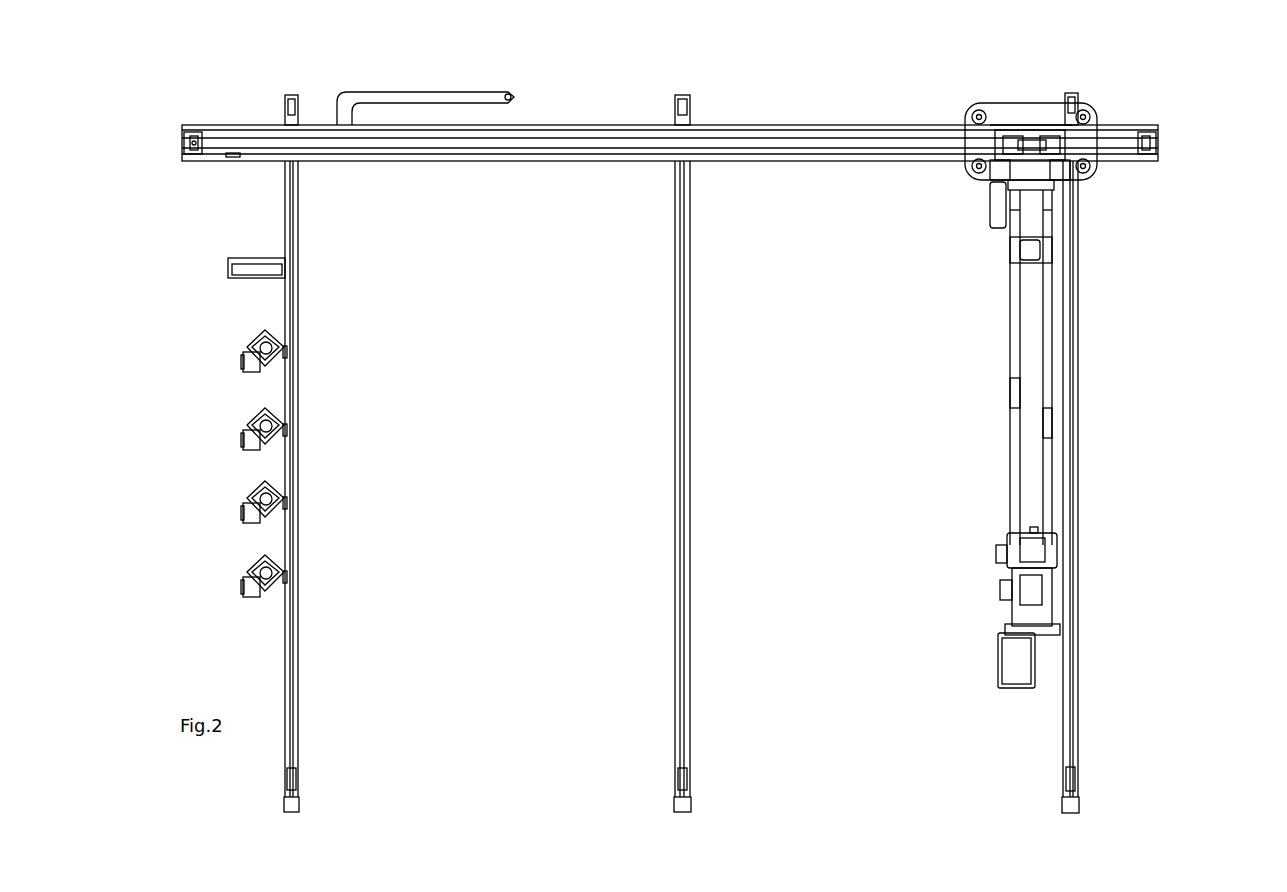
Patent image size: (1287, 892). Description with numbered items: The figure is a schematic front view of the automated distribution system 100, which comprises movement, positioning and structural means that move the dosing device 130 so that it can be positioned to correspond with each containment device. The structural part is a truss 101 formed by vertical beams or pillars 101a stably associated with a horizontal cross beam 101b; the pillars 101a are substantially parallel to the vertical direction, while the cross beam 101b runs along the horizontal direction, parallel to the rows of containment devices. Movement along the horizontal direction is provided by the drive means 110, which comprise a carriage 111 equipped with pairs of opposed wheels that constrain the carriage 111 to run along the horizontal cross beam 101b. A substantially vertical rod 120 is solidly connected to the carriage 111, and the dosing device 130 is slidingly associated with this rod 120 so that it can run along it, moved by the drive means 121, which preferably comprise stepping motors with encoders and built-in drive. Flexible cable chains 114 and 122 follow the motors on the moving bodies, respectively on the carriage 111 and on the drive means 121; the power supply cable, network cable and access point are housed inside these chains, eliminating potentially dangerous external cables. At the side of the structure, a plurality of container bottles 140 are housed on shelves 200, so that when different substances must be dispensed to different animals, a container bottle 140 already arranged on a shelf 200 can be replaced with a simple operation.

The automated system 100 is at (226, 104).
The truss 101 is at (1160, 140).
The vertical pillars 101a is at (300, 222).
The horizontal cross beam 101b is at (758, 125).
The drive means 110 is at (1032, 118).
The carriage 111 is at (990, 120).
The flexible cable chain 114 is at (430, 88).
The vertical rod 120 is at (1008, 425).
The drive means 121 is at (1004, 556).
The flexible cable chain 122 is at (1068, 396).
The dosing device 130 is at (1000, 611).
The container bottles 140 is at (244, 340).
The shelves 200 is at (238, 572).